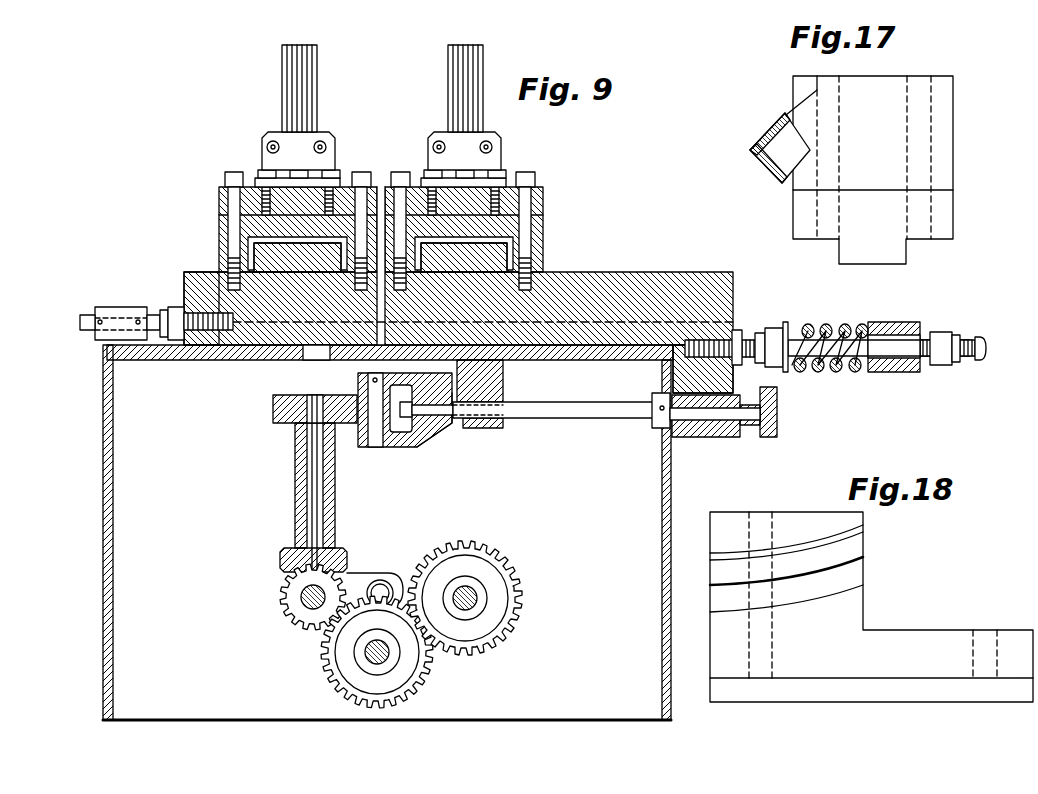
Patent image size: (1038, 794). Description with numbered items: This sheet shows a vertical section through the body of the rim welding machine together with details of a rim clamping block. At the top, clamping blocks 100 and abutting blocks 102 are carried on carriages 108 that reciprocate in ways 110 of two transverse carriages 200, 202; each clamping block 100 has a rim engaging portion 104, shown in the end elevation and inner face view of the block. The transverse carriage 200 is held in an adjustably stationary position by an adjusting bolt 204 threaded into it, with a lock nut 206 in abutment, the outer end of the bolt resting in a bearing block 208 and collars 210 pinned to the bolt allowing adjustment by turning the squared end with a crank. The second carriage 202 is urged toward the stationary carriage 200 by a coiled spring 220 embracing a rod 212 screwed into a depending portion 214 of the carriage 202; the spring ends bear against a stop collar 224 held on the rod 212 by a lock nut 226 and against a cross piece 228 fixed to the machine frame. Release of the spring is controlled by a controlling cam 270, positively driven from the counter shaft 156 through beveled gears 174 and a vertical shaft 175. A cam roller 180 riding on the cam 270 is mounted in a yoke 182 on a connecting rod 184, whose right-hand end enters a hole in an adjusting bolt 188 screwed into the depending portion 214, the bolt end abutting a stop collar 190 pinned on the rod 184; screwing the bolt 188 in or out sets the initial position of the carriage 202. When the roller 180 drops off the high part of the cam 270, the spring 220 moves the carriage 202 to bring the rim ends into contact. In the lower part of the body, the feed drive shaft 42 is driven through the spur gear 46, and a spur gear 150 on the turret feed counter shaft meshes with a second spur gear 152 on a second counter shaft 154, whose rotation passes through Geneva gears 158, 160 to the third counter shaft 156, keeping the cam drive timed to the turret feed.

In FIG. 9, the feed drive shaft 42 is at (380, 586).
In FIG. 9, the spur gear 46 is at (473, 598).
In FIG. 17, the clamping block 100 is at (893, 81).
In FIG. 18, the clamping block 100 is at (925, 622).
In FIG. 9, the abutting block 102 is at (219, 191).
In FIG. 17, the rim engaging portion 104 is at (786, 139).
In FIG. 18, the rim engaging portion 104 is at (863, 553).
In FIG. 9, the carriage 108 is at (240, 244).
In FIG. 9, the ways 110 is at (270, 260).
In FIG. 9, the spur gear 150 is at (497, 613).
In FIG. 9, the second spur gear 152 is at (403, 675).
In FIG. 9, the second counter shaft 154 is at (363, 668).
In FIG. 9, the third counter shaft 156 is at (305, 602).
In FIG. 9, the Geneva gear 158 is at (330, 658).
In FIG. 9, the Geneva gear 160 is at (295, 634).
In FIG. 9, the beveled gears 174 is at (288, 556).
In FIG. 9, the vertical shaft 175 is at (312, 512).
In FIG. 9, the cam roller 180 is at (400, 425).
In FIG. 9, the yoke 182 is at (437, 432).
In FIG. 9, the connecting rod 184 is at (568, 398).
In FIG. 9, the adjusting bolt 188 is at (784, 426).
In FIG. 9, the stop collar 190 is at (653, 423).
In FIG. 9, the transverse carriage 200 is at (182, 272).
In FIG. 9, the second carriage 202 is at (620, 276).
In FIG. 9, the adjusting bolt 204 is at (157, 313).
In FIG. 9, the lock nut 206 is at (170, 342).
In FIG. 9, the bearing block 208 is at (118, 342).
In FIG. 9, the collars 210 is at (138, 305).
In FIG. 9, the rod 212 is at (808, 350).
In FIG. 9, the depending portion 214 is at (690, 372).
In FIG. 9, the coiled spring 220 is at (813, 368).
In FIG. 9, the stop collar 224 is at (786, 325).
In FIG. 9, the lock nut 226 is at (758, 332).
In FIG. 9, the cross piece 228 is at (903, 322).
In FIG. 9, the controlling cam 270 is at (266, 412).